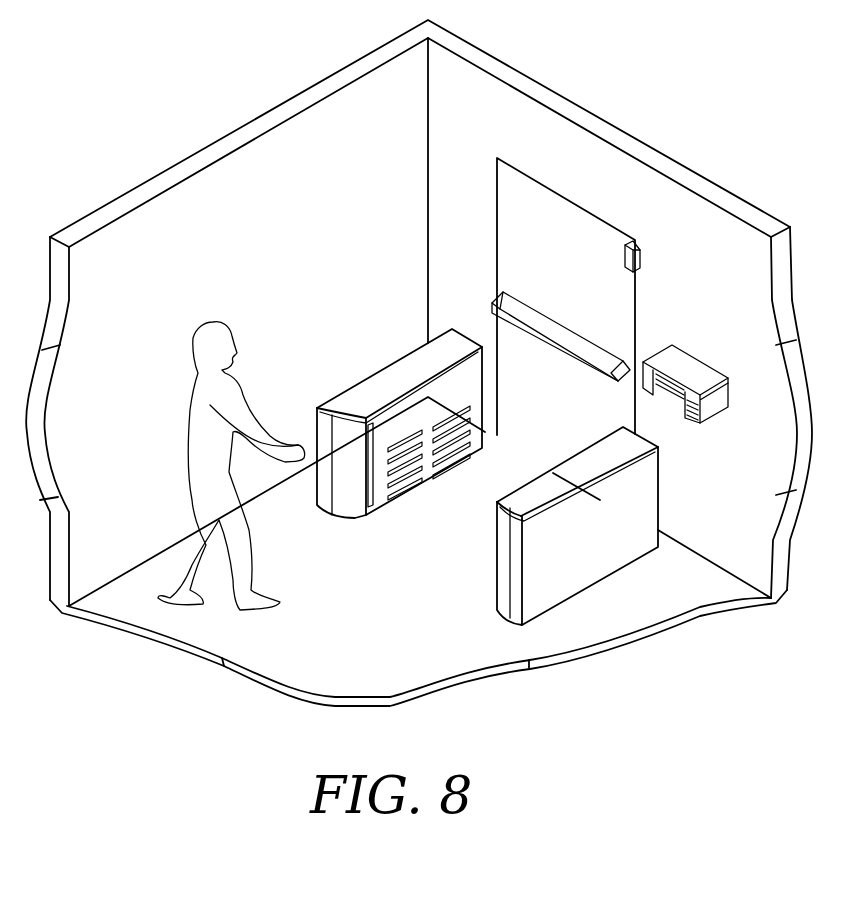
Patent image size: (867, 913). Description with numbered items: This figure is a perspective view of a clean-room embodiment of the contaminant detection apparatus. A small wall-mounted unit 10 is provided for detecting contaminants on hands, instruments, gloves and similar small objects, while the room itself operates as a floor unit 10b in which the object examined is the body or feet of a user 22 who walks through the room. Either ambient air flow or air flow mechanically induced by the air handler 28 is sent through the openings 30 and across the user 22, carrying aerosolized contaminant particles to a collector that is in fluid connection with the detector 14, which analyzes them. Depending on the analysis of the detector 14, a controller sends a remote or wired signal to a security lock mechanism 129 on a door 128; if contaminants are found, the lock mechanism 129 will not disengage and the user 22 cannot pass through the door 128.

The apparatus 10 is at (690, 353).
The floor unit 10b is at (426, 578).
The detector 14 is at (658, 494).
The user 22 is at (188, 391).
The air handler 28 is at (427, 423).
The openings 30 is at (467, 402).
The door 128 is at (587, 211).
The security lock mechanism 129 is at (641, 256).